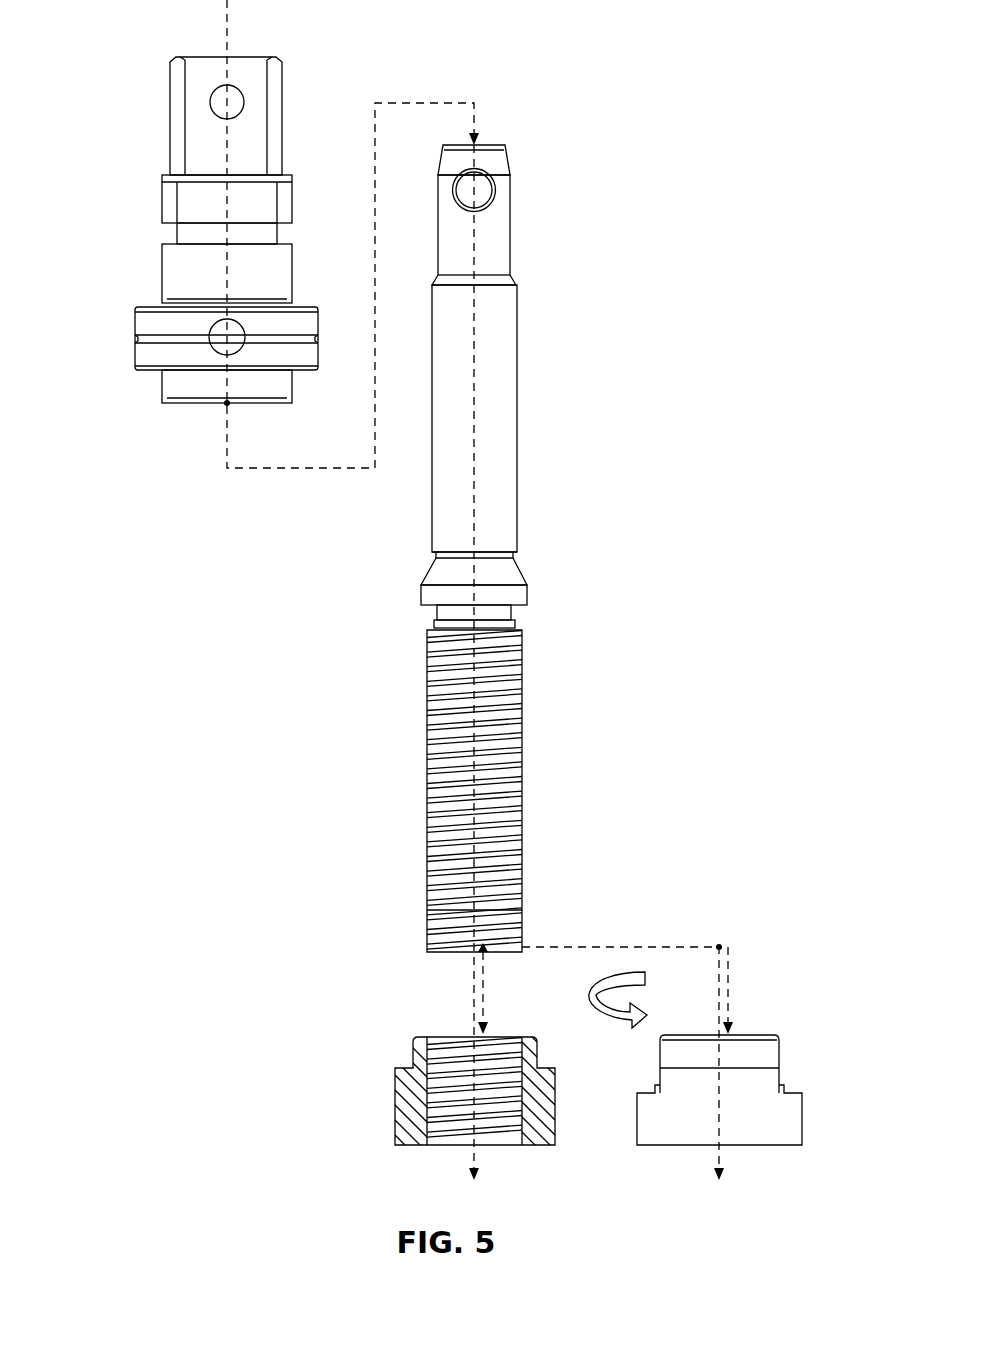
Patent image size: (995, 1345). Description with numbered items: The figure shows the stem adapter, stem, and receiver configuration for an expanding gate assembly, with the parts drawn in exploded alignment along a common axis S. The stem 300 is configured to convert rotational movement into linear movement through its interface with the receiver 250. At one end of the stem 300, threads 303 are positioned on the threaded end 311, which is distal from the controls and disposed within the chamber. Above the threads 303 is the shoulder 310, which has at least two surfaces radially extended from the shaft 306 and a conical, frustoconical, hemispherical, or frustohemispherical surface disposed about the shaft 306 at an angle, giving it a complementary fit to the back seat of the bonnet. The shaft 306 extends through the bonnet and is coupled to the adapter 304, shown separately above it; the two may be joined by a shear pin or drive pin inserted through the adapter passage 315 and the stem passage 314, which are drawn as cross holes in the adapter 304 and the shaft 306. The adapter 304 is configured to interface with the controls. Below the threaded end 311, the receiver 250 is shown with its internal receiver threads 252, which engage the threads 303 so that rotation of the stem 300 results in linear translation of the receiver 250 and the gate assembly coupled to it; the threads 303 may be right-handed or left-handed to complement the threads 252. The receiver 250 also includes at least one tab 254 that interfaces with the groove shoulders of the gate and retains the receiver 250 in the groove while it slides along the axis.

The stem 300 is at (725, 56).
The adapter 304 is at (134, 133).
The adapter passage 315 is at (218, 338).
The shaft 306 is at (517, 425).
The stem passage 314 is at (484, 190).
The shoulder 310 is at (525, 577).
The threads 303 is at (522, 800).
The threaded end 311 is at (427, 917).
The receiver 250 is at (392, 1027).
The receiver threads 252 is at (430, 1095).
The tab 254 is at (652, 1092).
The axis S is at (227, 28).